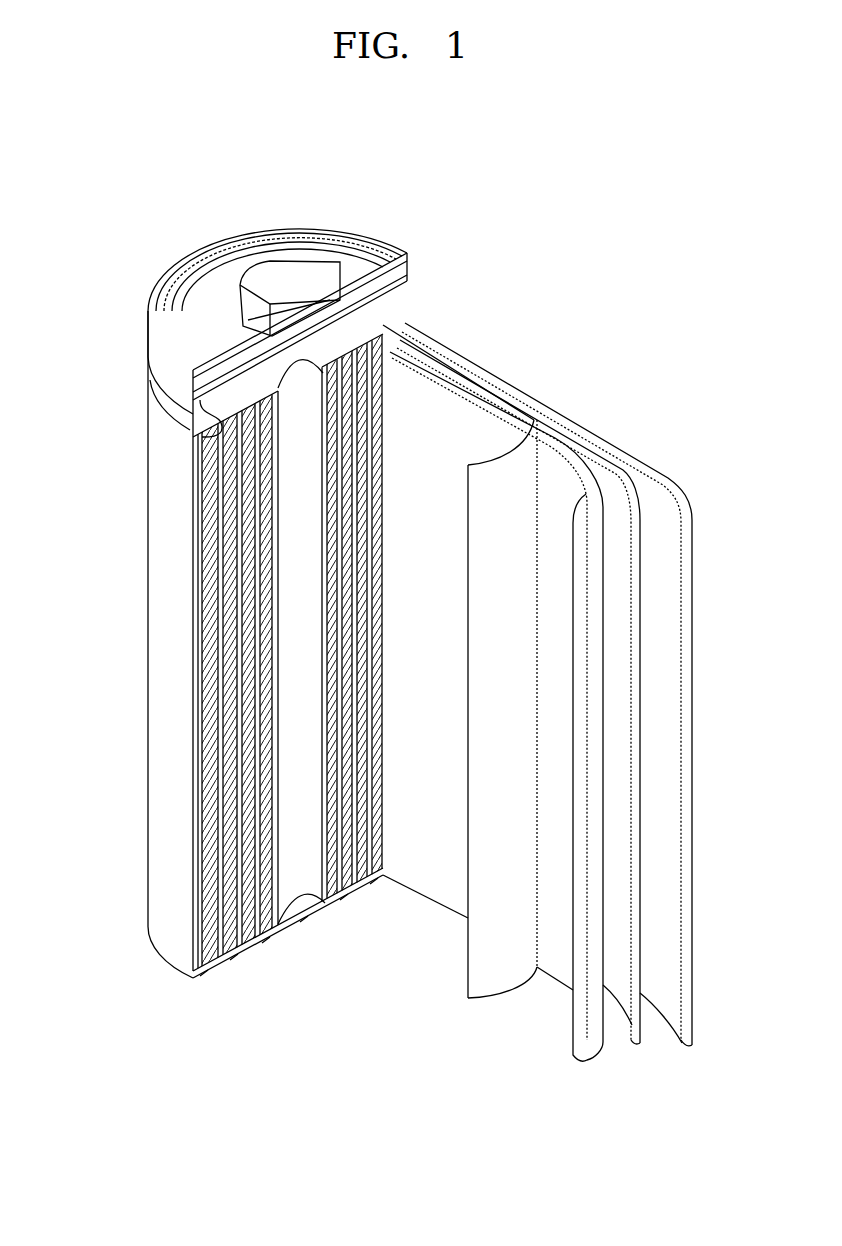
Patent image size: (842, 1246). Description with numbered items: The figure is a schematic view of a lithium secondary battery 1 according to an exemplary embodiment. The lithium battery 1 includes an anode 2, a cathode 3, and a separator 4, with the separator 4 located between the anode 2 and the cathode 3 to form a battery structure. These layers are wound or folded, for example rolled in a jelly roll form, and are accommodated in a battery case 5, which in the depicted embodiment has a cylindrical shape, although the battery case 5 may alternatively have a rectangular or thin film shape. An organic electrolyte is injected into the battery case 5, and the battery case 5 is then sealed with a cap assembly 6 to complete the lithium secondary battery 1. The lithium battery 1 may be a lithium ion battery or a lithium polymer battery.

The lithium battery 1 is at (503, 246).
The anode 2 is at (678, 495).
The cathode 3 is at (560, 443).
The separator 4 is at (477, 390).
The battery case 5 is at (160, 647).
The cap assembly 6 is at (276, 267).